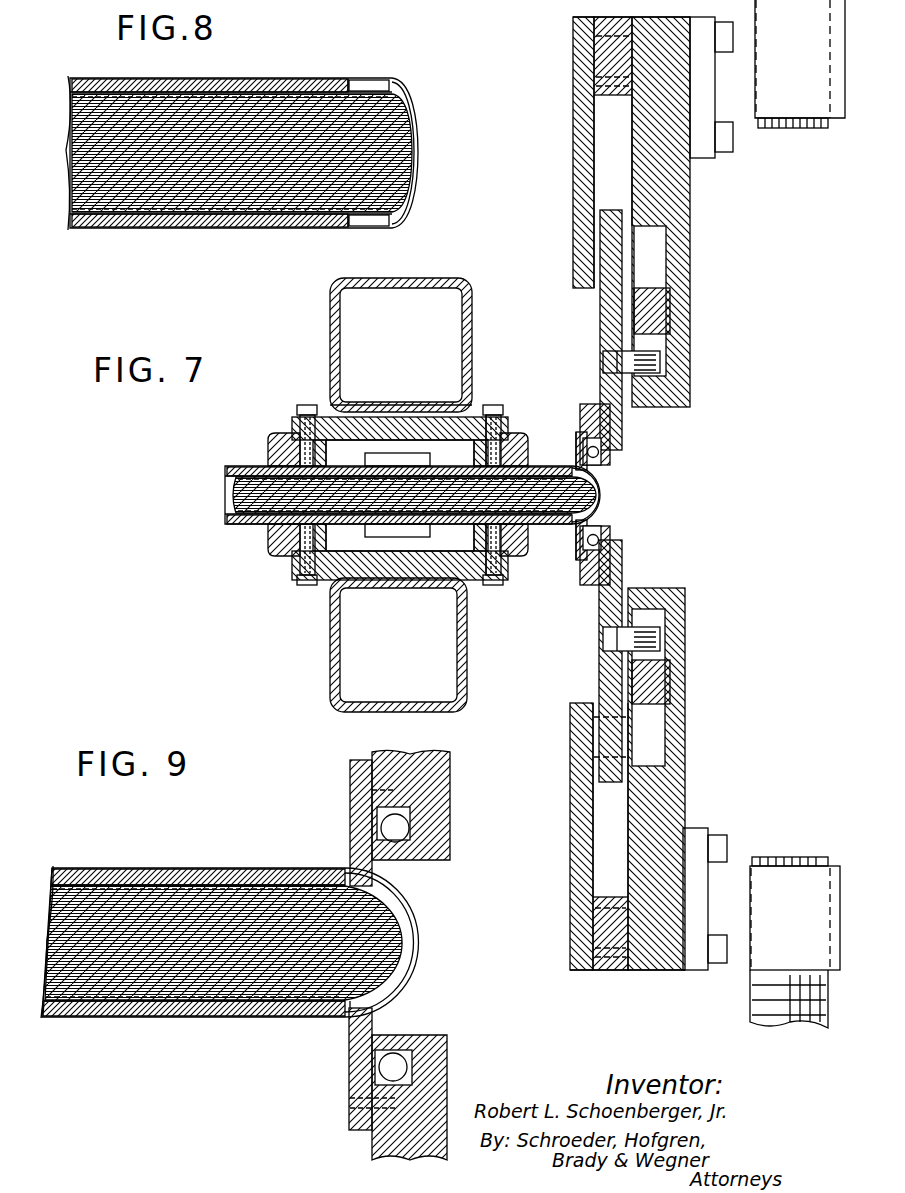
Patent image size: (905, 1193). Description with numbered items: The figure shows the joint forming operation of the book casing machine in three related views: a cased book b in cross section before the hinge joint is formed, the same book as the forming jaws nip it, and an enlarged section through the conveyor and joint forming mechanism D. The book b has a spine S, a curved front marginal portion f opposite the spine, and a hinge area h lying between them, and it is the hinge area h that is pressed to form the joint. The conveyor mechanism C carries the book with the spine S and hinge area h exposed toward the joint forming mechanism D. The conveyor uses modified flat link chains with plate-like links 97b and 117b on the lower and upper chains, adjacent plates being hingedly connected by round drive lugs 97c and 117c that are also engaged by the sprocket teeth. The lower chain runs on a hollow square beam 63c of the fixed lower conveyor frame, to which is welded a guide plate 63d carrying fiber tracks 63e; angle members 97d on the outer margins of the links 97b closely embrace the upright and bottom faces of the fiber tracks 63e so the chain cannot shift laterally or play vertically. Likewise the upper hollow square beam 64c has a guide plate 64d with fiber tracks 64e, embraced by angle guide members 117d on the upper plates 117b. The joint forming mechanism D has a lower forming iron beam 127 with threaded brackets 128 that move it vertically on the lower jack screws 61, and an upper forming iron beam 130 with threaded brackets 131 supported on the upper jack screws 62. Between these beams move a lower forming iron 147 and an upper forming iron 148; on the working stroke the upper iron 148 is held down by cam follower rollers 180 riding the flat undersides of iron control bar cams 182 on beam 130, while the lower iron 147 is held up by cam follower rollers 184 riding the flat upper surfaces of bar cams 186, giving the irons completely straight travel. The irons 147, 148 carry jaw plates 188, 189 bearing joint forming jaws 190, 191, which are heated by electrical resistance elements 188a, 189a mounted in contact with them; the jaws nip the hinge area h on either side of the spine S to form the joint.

In FIG. 7, the lower jack screw 61 is at (786, 858).
In FIG. 7, the upper jack screw 62 is at (782, 130).
In FIG. 7, the hollow square beam 63c is at (330, 640).
In FIG. 7, the guide plate 63d is at (490, 586).
In FIG. 7, the fiber tracks 63e is at (302, 572).
In FIG. 7, the hollow square beam 64c is at (330, 300).
In FIG. 7, the guide plate 64d is at (492, 404).
In FIG. 7, the fiber tracks 64e is at (306, 405).
In FIG. 7, the links 97b is at (268, 532).
In FIG. 7, the drive lug 97c is at (400, 540).
In FIG. 7, the angle members 97d is at (268, 544).
In FIG. 7, the links 117b is at (268, 462).
In FIG. 7, the drive lug 117c is at (392, 458).
In FIG. 7, the angle guide members 117d is at (276, 440).
In FIG. 7, the lower forming iron beam 127 is at (688, 760).
In FIG. 7, the threaded brackets 128 is at (727, 868).
In FIG. 7, the upper forming iron beam 130 is at (692, 232).
In FIG. 7, the threaded brackets 131 is at (745, 115).
In FIG. 7, the lower forming iron 147 is at (602, 668).
In FIG. 7, the upper forming iron 148 is at (606, 322).
In FIG. 7, the cam follower rollers 180 is at (660, 366).
In FIG. 7, the iron control bar cams 182 is at (656, 305).
In FIG. 7, the cam follower rollers 184 is at (652, 628).
In FIG. 7, the bar cams 186 is at (672, 690).
In FIG. 7, the jaw plate 188 is at (590, 586).
In FIG. 9, the jaw plate 188 is at (448, 1044).
In FIG. 9, the electrical resistance element 188a is at (394, 1064).
In FIG. 7, the jaw plate 189 is at (582, 404).
In FIG. 9, the jaw plate 189 is at (450, 790).
In FIG. 9, the electrical resistance element 189a is at (400, 826).
In FIG. 7, the joint forming jaw 190 is at (589, 528).
In FIG. 9, the joint forming jaw 190 is at (352, 1058).
In FIG. 7, the joint forming jaw 191 is at (589, 464).
In FIG. 9, the joint forming jaw 191 is at (350, 835).
In FIG. 8, the conveyor mechanism C is at (126, 79).
In FIG. 7, the conveyor mechanism C is at (466, 280).
In FIG. 9, the conveyor mechanism C is at (128, 868).
In FIG. 7, the joint forming mechanism D is at (626, 452).
In FIG. 8, the spine S is at (420, 140).
In FIG. 7, the spine S is at (601, 495).
In FIG. 9, the spine S is at (420, 940).
In FIG. 8, the book b is at (278, 79).
In FIG. 7, the book b is at (226, 470).
In FIG. 9, the book b is at (224, 868).
In FIG. 7, the front marginal portion f is at (232, 492).
In FIG. 8, the hinge area h is at (358, 79).
In FIG. 7, the jaw edge j is at (578, 455).
In FIG. 9, the jaw edge j is at (342, 1010).